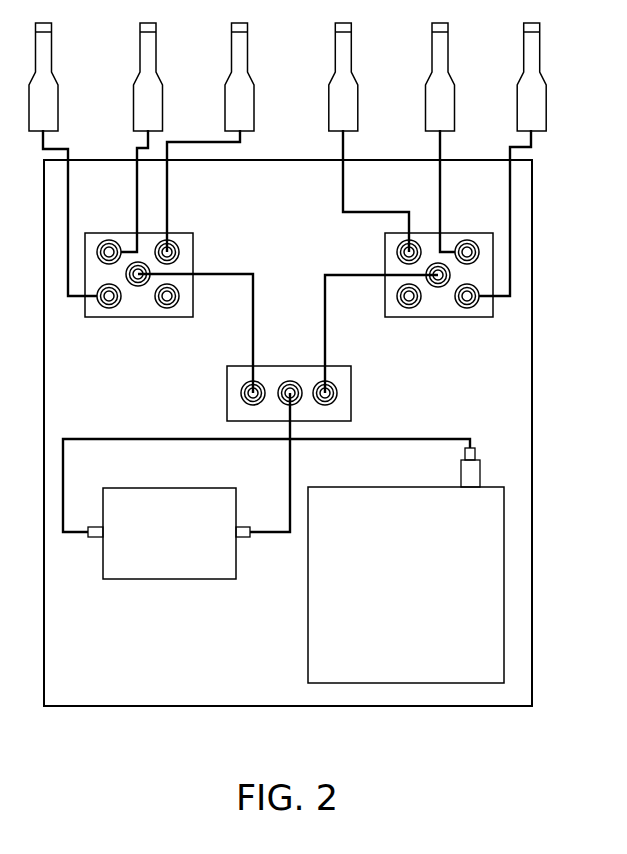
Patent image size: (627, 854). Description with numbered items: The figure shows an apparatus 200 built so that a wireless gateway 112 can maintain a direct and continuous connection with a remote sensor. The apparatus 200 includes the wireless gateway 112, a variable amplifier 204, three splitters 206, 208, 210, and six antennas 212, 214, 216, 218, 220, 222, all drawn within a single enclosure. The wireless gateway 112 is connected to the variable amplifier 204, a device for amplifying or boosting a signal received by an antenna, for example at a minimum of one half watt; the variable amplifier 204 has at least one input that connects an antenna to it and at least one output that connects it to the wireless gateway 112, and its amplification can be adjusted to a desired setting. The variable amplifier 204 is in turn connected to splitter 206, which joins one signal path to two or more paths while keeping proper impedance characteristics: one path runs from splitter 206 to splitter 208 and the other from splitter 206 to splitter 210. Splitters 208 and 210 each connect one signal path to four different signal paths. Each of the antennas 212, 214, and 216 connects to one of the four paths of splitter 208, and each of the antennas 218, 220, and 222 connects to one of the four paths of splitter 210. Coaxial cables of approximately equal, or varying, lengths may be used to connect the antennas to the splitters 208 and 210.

The apparatus 200 is at (271, 770).
The antenna 212 is at (53, 43).
The antenna 214 is at (157, 43).
The antenna 216 is at (248, 43).
The antenna 218 is at (353, 43).
The antenna 220 is at (450, 43).
The antenna 222 is at (540, 43).
The splitter 208 is at (194, 241).
The splitter 210 is at (384, 240).
The splitter 206 is at (352, 372).
The variable amplifier 204 is at (169, 533).
The wireless gateway 112 is at (406, 565).